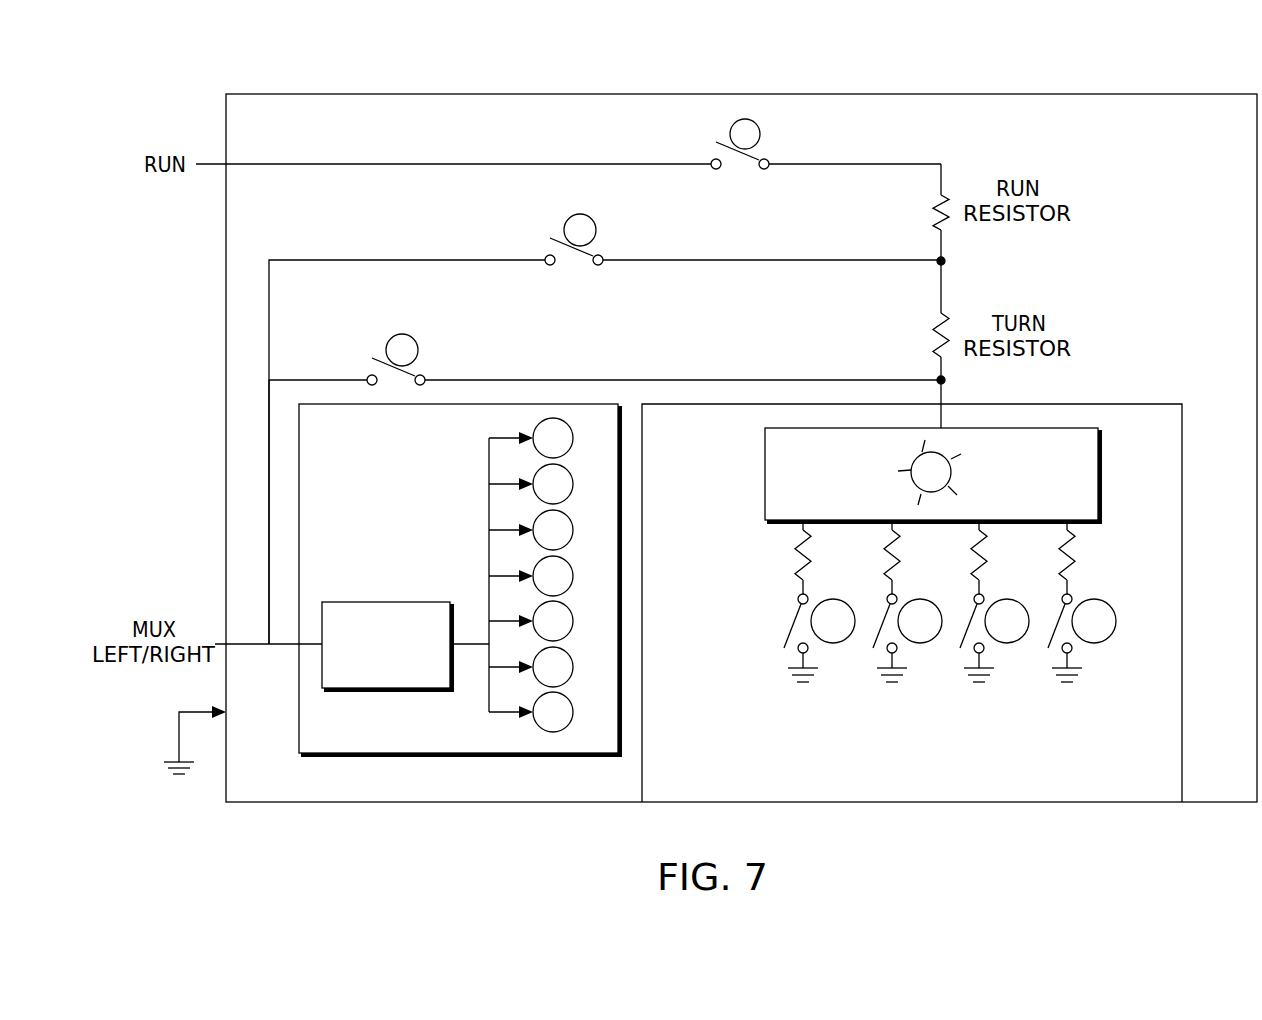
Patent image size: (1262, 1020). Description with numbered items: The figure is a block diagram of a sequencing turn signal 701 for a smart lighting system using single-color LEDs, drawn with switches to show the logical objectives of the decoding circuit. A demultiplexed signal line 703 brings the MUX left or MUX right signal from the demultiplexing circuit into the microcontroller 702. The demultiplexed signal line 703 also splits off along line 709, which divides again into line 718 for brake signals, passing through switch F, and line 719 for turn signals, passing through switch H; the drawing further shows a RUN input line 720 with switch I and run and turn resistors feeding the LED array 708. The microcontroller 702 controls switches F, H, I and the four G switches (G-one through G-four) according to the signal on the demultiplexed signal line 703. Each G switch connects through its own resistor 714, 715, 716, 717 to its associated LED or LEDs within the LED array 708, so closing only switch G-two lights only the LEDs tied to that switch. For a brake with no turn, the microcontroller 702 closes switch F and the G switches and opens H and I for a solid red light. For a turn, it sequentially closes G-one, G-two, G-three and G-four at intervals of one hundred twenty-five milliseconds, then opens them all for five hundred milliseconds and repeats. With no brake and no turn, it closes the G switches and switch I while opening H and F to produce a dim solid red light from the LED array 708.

The sequencing turn signal 701 is at (214, 60).
The microcontroller 702 is at (459, 579).
The demultiplexed signal line 703 is at (248, 646).
The LED array 708 is at (1102, 477).
The line 709 is at (267, 462).
The resistor G1 714 is at (811, 553).
The resistor G2 715 is at (900, 553).
The resistor G3 716 is at (987, 553).
The resistor G4 717 is at (1075, 553).
The line for brake signals 718 is at (328, 378).
The line for turn signals 719 is at (406, 257).
The run input line 720 is at (501, 161).